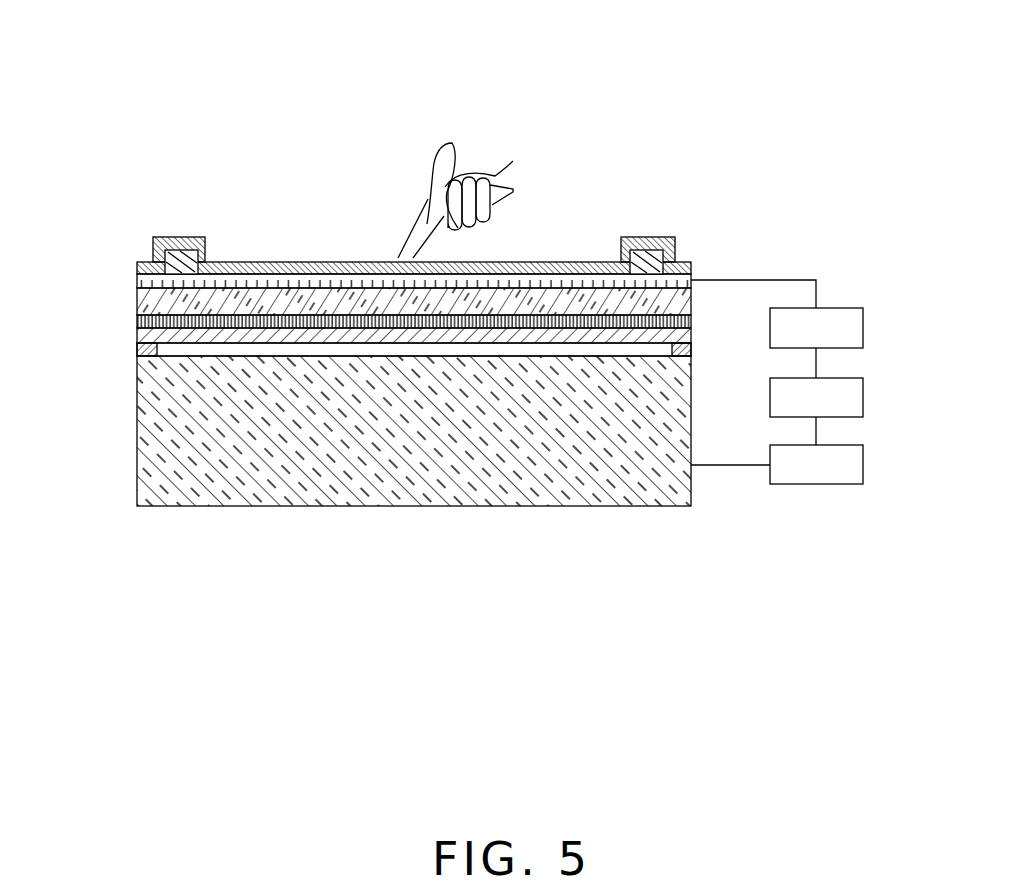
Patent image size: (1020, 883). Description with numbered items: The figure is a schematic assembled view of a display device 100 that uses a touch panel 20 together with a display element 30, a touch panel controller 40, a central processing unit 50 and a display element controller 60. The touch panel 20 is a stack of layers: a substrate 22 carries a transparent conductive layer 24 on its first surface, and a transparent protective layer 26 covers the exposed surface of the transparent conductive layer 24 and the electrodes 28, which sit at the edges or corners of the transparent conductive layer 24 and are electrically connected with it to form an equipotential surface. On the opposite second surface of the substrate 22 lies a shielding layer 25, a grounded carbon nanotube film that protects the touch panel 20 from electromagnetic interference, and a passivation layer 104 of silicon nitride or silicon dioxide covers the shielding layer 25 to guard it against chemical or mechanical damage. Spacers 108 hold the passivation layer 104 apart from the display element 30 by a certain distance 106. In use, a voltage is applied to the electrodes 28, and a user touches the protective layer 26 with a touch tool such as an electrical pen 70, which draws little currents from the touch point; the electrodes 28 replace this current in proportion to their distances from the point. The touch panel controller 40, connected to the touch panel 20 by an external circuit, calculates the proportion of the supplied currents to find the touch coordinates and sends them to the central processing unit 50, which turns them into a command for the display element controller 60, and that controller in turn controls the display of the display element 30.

The display device 100 is at (480, 40).
The touch panel 20 is at (50, 243).
The protective layer 26 is at (137, 263).
The transparent conductive layer 24 is at (137, 280).
The substrate 22 is at (137, 302).
The shielding layer 25 is at (137, 322).
The electrodes 28 is at (655, 240).
The passivation layer 104 is at (137, 337).
The distance 106 is at (648, 347).
The spacers 108 is at (142, 350).
The display element 30 is at (160, 428).
The electrical pen 70 is at (430, 178).
The touch panel controller 40 is at (863, 330).
The central processing unit 50 is at (863, 398).
The display element controller 60 is at (863, 465).